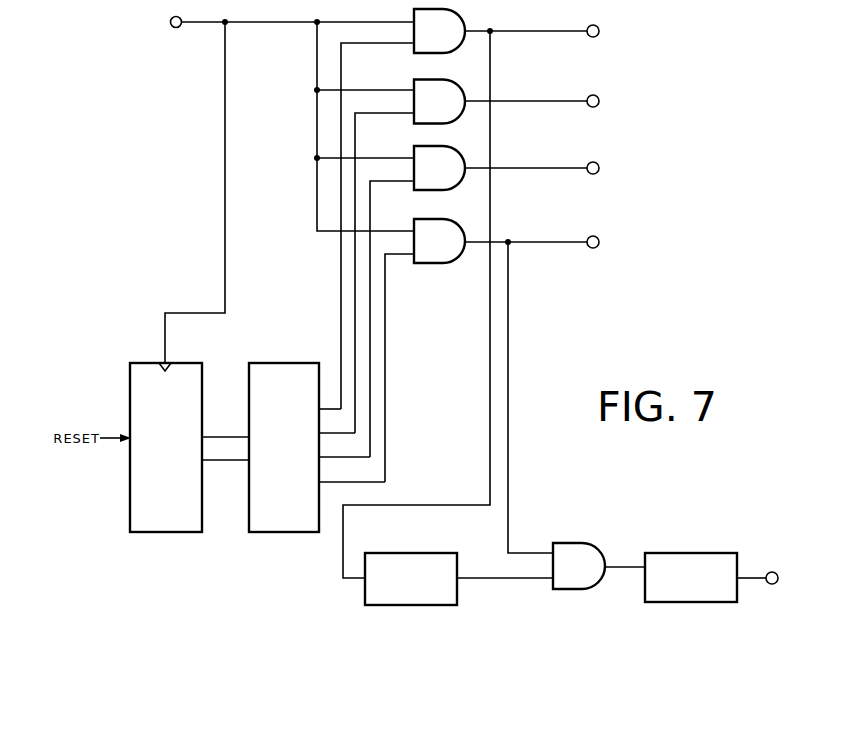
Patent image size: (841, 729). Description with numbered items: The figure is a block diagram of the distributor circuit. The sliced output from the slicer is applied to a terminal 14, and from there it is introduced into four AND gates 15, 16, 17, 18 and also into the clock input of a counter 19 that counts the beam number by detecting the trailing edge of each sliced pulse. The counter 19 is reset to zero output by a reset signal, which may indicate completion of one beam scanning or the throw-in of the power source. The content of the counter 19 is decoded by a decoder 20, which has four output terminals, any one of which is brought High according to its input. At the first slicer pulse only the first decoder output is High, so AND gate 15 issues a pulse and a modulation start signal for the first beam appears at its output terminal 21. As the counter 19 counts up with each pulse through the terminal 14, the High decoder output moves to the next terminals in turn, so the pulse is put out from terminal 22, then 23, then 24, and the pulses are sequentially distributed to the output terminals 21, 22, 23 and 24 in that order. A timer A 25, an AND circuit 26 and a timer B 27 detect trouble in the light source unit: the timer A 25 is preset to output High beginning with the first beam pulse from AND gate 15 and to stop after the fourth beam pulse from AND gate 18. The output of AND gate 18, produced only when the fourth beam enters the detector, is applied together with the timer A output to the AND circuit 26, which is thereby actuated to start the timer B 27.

The terminal 14 is at (170, 27).
The AND gate 15 is at (458, 50).
The AND gate 16 is at (459, 121).
The AND gate 17 is at (459, 188).
The AND gate 18 is at (427, 265).
The counter 19 is at (140, 362).
The decoder 20 is at (278, 362).
The output terminal 21 is at (597, 37).
The output terminal 22 is at (597, 107).
The output terminal 23 is at (597, 174).
The output terminal 24 is at (597, 248).
The timer A 25 is at (425, 553).
The AND circuit 26 is at (575, 543).
The timer B 27 is at (692, 553).